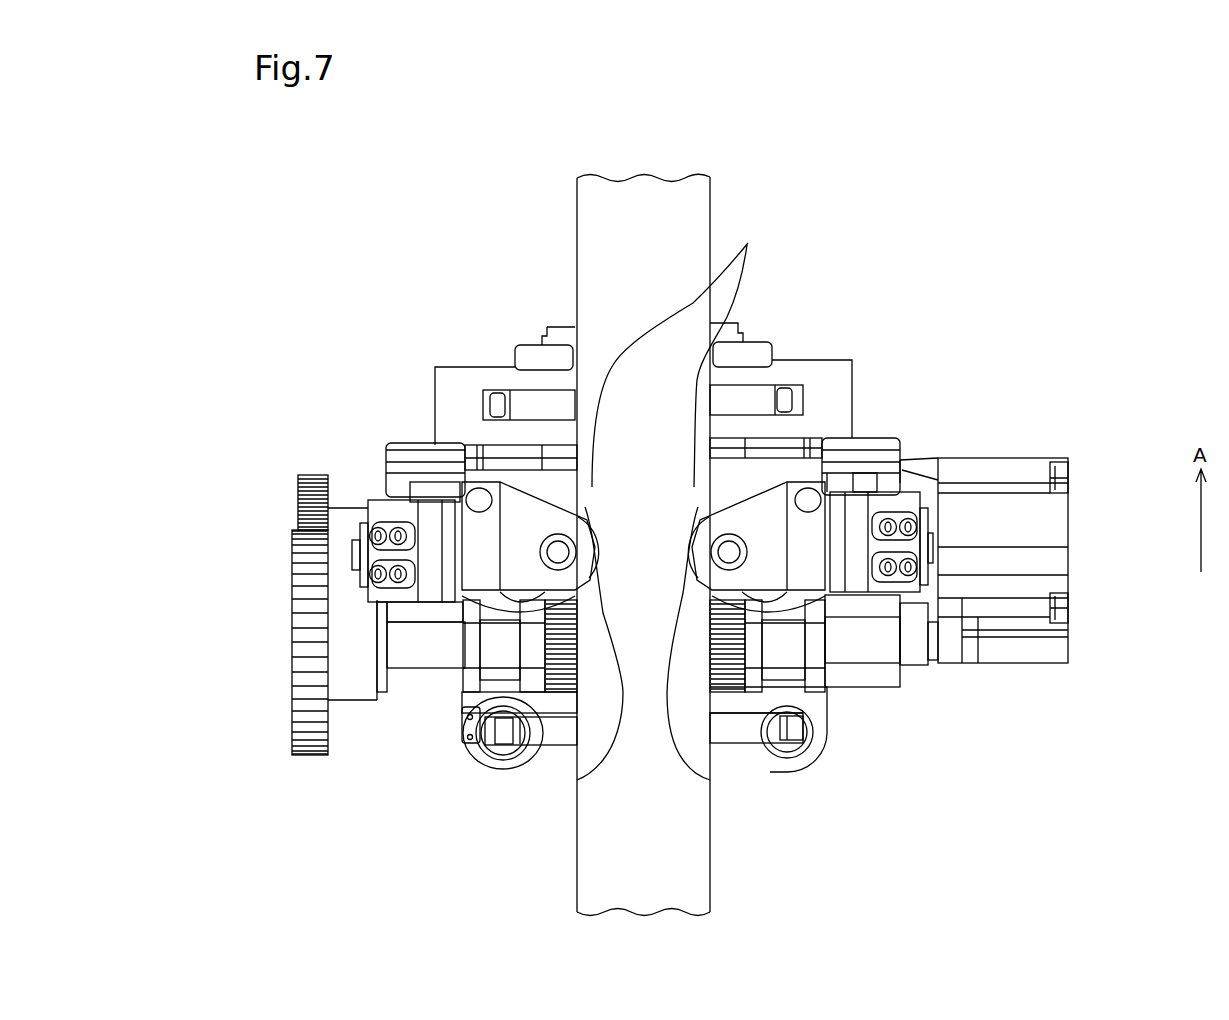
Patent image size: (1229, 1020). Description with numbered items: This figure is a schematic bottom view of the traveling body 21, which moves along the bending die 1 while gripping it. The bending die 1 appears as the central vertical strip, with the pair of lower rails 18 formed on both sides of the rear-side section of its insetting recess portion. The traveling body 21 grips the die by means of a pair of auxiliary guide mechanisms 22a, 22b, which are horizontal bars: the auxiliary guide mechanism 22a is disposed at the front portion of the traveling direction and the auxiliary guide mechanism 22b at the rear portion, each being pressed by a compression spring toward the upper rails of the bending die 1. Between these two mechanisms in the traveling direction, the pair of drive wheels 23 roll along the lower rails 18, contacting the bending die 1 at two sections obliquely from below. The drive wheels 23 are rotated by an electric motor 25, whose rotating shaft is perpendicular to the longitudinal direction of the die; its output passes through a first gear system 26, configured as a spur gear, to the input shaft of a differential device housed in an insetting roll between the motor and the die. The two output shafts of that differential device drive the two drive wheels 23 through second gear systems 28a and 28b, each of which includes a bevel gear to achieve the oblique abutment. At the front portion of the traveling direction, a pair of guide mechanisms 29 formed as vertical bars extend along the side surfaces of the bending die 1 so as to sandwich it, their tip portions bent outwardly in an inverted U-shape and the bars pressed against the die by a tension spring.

The bending die 1 is at (576, 866).
The lower rails 18 is at (669, 499).
The traveling body 21 is at (235, 490).
The auxiliary guide mechanism 22a is at (535, 403).
The auxiliary guide mechanism 22b is at (733, 735).
The drive wheels 23 is at (577, 775).
The electric motor 25 is at (1040, 523).
The first gear system 26 is at (298, 513).
The second gear system 28a is at (560, 648).
The second gear system 28b is at (767, 685).
The guide mechanisms 29 is at (535, 355).